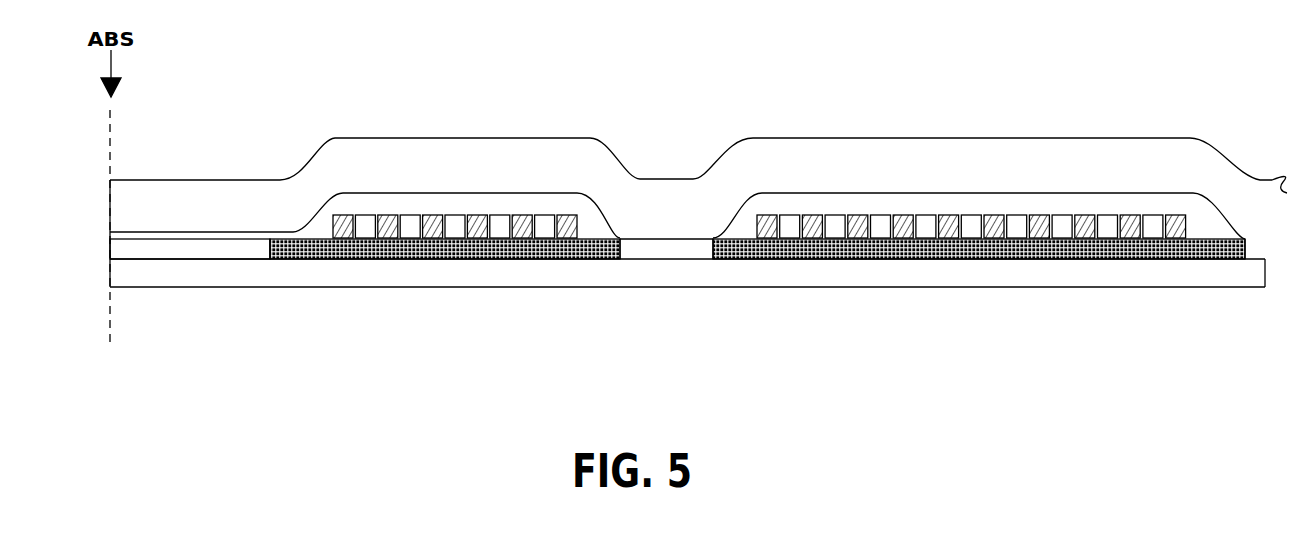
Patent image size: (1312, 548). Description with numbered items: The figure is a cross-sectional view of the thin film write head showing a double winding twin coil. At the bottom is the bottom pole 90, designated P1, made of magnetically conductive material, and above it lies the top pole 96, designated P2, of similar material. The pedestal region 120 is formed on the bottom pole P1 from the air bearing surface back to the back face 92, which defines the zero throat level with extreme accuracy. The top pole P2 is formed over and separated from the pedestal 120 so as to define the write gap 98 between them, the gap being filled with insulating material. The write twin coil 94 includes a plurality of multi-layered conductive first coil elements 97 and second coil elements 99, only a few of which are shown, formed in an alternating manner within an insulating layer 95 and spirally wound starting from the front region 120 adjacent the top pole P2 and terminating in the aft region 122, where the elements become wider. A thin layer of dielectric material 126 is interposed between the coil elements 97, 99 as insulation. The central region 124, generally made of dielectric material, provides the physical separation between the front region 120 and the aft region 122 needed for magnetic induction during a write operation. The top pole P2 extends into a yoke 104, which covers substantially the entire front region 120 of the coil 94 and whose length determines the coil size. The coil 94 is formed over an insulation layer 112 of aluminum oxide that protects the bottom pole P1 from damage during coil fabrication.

The bottom pole 90 is at (687, 234).
The back face 92 is at (270, 258).
The write twin coil 94 is at (510, 193).
The insulating layer 95 is at (572, 202).
The top pole 96 is at (195, 198).
The first coil elements 97 is at (343, 215).
The write gap 98 is at (178, 248).
The second coil elements 99 is at (407, 216).
The yoke 104 is at (325, 170).
The insulation layer 112 is at (757, 250).
The pedestal region 120 is at (467, 73).
The aft region 122 is at (965, 207).
The central region 124 is at (652, 238).
The dielectric material layer 126 is at (892, 238).
The bottom pole P1 is at (370, 284).
The top pole P2 is at (212, 205).